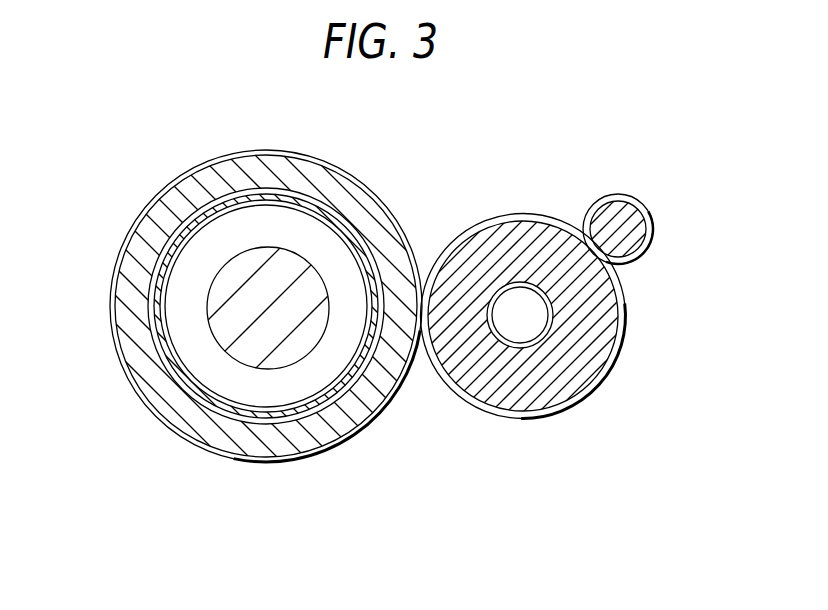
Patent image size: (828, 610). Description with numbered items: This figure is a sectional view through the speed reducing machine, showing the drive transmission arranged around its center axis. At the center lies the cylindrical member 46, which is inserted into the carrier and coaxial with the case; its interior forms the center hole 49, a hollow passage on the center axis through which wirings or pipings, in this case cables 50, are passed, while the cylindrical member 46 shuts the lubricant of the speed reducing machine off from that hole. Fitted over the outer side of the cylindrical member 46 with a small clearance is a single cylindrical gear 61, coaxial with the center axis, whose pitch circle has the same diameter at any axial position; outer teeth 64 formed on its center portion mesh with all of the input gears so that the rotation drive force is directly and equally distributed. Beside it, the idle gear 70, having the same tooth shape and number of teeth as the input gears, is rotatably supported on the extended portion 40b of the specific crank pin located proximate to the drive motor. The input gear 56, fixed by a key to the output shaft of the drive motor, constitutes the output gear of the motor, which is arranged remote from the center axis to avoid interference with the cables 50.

The outer teeth 64 is at (362, 185).
The cylindrical gear 61 is at (125, 320).
The center hole 49 is at (176, 345).
The cylindrical member 46 is at (270, 417).
The cables 50 is at (302, 345).
The idle gear 70 is at (523, 227).
The extended portion 40b is at (523, 338).
The input gear 56 is at (638, 230).